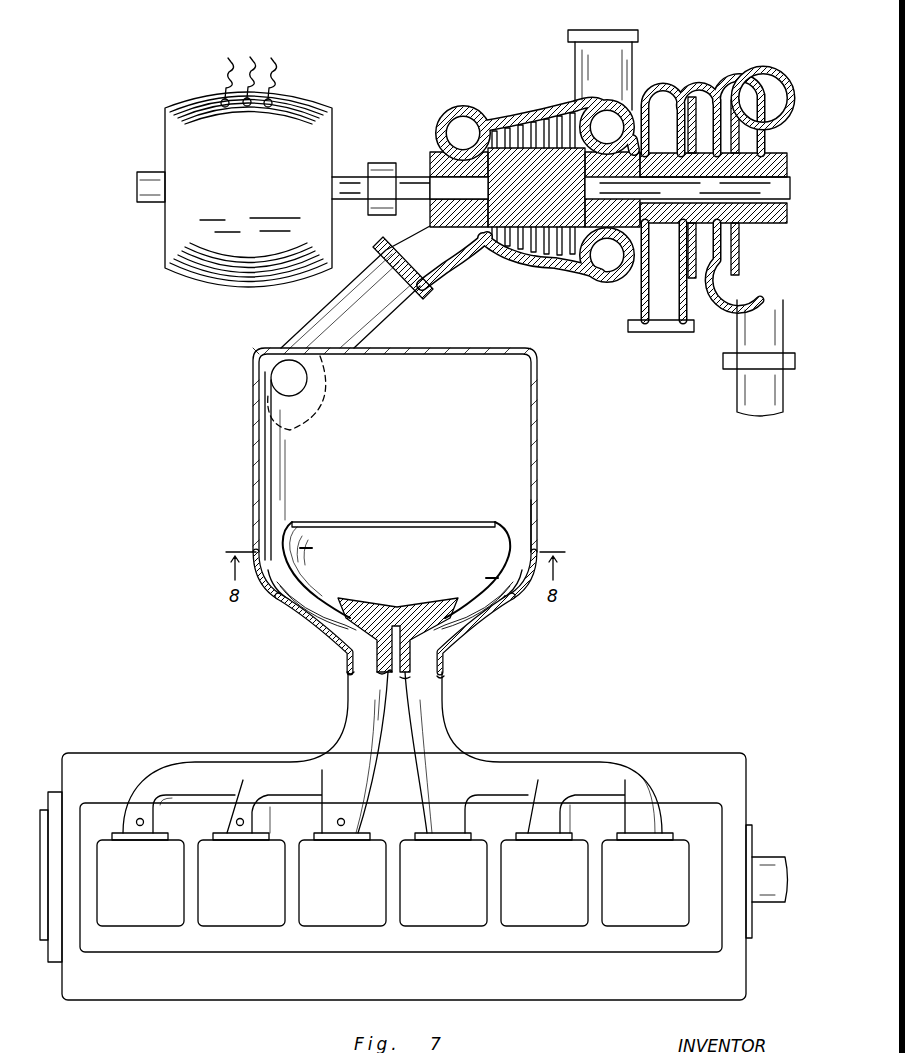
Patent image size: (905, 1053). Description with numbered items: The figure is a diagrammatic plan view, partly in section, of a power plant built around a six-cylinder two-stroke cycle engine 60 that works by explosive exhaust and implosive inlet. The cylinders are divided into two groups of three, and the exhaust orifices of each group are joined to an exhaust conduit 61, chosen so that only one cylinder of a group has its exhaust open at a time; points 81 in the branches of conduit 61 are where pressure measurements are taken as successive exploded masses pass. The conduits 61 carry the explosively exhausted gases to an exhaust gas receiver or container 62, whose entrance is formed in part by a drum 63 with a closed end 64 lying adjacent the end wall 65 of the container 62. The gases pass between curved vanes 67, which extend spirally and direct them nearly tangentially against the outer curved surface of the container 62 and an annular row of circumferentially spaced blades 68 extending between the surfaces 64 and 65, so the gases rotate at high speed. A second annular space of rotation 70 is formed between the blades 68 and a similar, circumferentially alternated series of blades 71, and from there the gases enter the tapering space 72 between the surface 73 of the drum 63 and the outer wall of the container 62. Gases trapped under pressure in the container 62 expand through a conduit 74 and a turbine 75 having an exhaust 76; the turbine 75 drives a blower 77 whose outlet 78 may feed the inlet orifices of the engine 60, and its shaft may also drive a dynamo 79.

The engine 60 is at (725, 815).
The exhaust conduit 61 is at (335, 736).
The exhaust gas receiver or container 62 is at (537, 460).
The drum 63 is at (360, 521).
The closed end of drum 64 is at (320, 600).
The end wall of container 65 is at (300, 618).
The curved vanes 67 is at (322, 625).
The blades or vanes 68 is at (283, 600).
The second annular space of rotation 70 is at (262, 585).
The blades 71 is at (300, 549).
The tapering space 72 is at (520, 535).
The surface of drum 73 is at (509, 525).
The conduit 74 is at (332, 318).
The turbine 75 is at (552, 252).
The exhaust 76 is at (593, 60).
The blower 77 is at (732, 80).
The outlet of blower 78 is at (752, 386).
The dynamo 79 is at (175, 222).
The points 81 is at (136, 822).